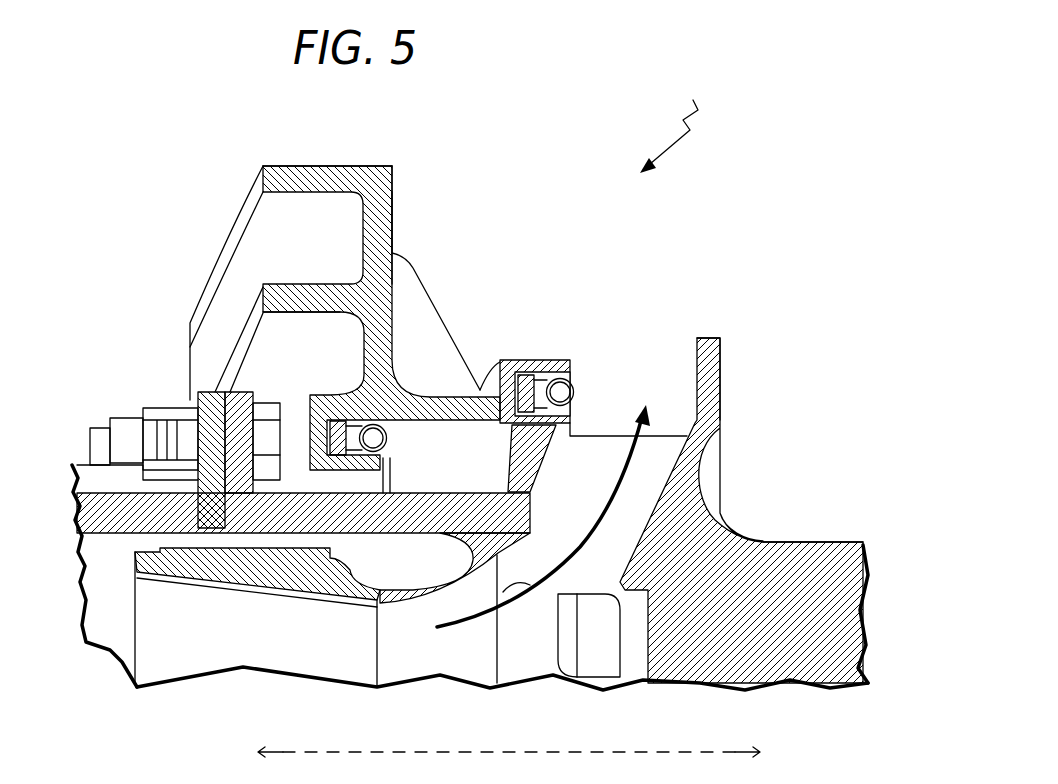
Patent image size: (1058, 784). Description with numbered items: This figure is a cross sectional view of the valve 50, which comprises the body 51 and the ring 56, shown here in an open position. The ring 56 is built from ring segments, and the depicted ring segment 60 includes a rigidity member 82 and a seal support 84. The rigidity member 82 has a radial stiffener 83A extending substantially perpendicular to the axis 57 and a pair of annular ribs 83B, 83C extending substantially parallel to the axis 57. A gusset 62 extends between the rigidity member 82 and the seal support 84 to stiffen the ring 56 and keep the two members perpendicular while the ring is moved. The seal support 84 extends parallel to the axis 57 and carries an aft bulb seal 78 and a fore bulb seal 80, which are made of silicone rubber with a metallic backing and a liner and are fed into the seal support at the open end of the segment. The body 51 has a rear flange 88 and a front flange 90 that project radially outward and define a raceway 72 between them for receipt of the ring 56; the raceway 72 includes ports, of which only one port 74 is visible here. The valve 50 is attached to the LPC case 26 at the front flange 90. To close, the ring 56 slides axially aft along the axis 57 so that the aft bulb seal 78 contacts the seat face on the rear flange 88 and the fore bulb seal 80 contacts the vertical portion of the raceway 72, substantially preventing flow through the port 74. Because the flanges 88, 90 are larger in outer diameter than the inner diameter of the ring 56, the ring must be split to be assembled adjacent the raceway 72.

The LPC case 26 is at (72, 477).
The valve 50 is at (677, 125).
The body 51 is at (786, 528).
The ring 56 is at (360, 158).
The axis 57 is at (522, 748).
The ring segment 60 is at (282, 165).
The gusset 62 is at (428, 328).
The raceway 72 is at (503, 483).
The port 74 is at (652, 510).
The aft bulb seal 78 is at (570, 377).
The fore bulb seal 80 is at (393, 432).
The rigidity member 82 is at (393, 198).
The radial stiffener 83A is at (377, 238).
The annular rib 83B is at (337, 181).
The annular rib 83C is at (327, 290).
The seal support 84 is at (488, 380).
The rear flange 88 is at (722, 372).
The front flange 90 is at (240, 392).